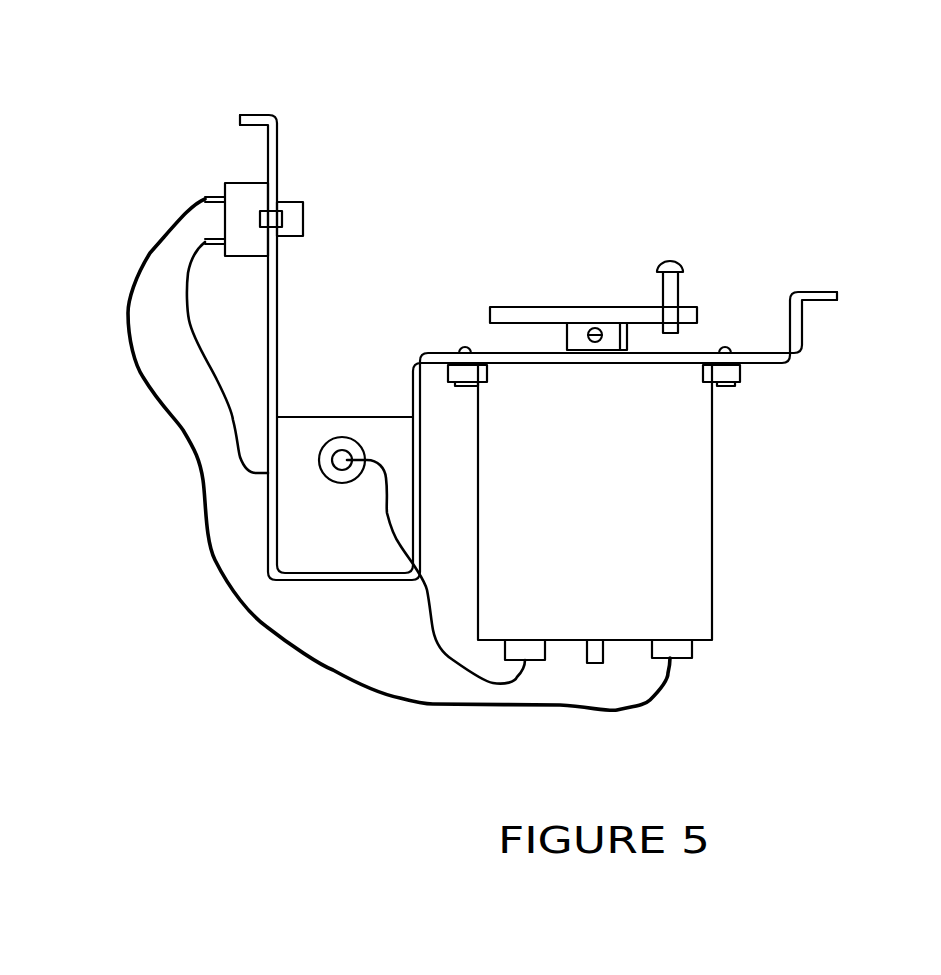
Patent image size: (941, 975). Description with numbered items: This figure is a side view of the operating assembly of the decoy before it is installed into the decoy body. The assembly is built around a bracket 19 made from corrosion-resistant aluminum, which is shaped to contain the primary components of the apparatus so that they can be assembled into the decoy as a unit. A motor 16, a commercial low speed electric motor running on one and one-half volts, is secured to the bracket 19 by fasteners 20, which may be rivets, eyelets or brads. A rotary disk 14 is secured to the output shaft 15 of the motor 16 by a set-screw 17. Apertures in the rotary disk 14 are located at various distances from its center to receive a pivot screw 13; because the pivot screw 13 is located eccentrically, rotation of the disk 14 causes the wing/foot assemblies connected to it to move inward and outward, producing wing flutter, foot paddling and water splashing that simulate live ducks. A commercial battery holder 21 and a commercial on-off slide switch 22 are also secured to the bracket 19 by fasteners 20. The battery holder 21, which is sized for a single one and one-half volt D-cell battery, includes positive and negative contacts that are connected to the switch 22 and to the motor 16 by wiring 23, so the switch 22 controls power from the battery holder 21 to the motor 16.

The pivot screw 13 is at (665, 258).
The rotary disk 14 is at (540, 306).
The output shaft 15 is at (627, 342).
The motor 16 is at (715, 558).
The set-screw 17 is at (588, 335).
The bracket 19 is at (260, 113).
The fasteners 20 is at (462, 387).
The battery holder 21 is at (307, 417).
The on-off slide switch 22 is at (242, 197).
The wiring 23 is at (190, 321).